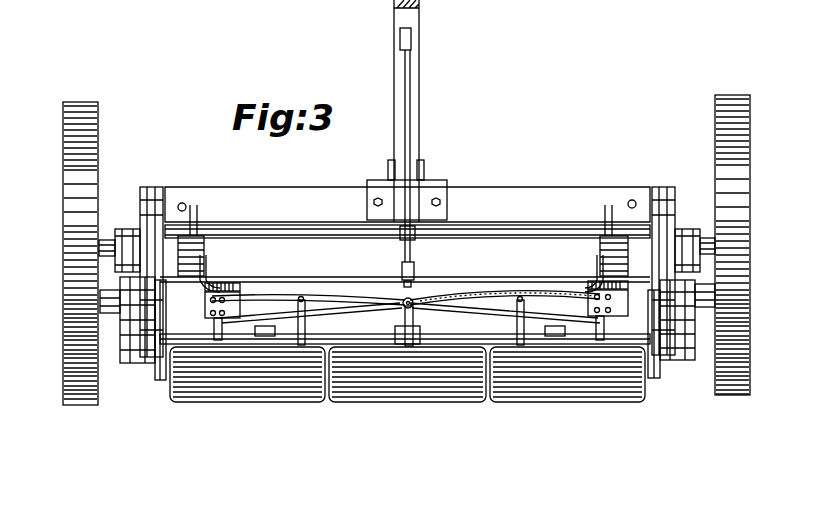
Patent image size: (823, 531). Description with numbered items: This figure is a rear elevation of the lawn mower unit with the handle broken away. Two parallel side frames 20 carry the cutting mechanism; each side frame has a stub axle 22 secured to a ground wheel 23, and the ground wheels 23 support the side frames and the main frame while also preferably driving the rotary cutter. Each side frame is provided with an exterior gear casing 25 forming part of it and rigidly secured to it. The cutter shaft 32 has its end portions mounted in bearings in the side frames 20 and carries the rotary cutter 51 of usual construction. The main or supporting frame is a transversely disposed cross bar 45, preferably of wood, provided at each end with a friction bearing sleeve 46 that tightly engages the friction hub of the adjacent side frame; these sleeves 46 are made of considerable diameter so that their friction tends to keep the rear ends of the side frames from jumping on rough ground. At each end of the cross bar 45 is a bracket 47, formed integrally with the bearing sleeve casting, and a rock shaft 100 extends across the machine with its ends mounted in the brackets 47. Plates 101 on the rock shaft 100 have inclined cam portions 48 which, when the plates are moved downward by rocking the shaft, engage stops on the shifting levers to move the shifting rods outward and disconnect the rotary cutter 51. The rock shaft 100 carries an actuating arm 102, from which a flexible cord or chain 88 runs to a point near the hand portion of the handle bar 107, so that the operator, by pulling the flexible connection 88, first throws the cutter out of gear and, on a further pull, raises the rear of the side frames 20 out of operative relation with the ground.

The side frame 20 is at (157, 366).
The stub axle 22 is at (107, 243).
The ground wheel 23 is at (78, 293).
The gear casing 25 is at (135, 341).
The cutter shaft 32 is at (366, 335).
The cross bar 45 is at (320, 190).
The bearing sleeve 46 is at (177, 243).
The bracket 47 is at (200, 220).
The inclined cam portion 48 is at (223, 295).
The rotary cutter 51 is at (457, 294).
The flexible connection 88 is at (411, 128).
The rock shaft 100 is at (522, 238).
The plate 101 is at (216, 273).
The actuating arm 102 is at (445, 213).
The handle bar 107 is at (413, 66).